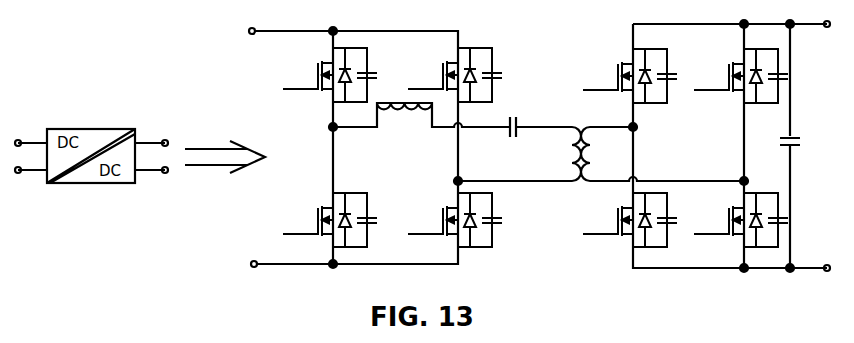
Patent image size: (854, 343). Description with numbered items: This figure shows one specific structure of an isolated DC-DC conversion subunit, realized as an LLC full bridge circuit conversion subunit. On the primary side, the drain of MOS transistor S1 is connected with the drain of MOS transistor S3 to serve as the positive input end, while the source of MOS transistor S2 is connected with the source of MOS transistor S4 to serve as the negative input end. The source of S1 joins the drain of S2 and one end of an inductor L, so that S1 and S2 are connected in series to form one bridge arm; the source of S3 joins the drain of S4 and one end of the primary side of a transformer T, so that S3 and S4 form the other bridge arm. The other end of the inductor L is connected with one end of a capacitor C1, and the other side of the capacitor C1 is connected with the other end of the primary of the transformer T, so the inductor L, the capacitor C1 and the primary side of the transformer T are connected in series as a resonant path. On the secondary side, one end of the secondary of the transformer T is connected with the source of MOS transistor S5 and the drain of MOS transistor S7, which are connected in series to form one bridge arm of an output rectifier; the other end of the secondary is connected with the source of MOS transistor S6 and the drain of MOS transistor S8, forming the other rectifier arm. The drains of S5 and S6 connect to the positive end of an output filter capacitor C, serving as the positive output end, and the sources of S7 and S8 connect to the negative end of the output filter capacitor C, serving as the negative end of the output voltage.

The MOS transistor S1 is at (330, 75).
The MOS transistor S2 is at (330, 220).
The MOS transistor S3 is at (455, 75).
The MOS transistor S4 is at (455, 220).
The MOS transistor S5 is at (630, 76).
The MOS transistor S6 is at (741, 76).
The MOS transistor S7 is at (630, 220).
The MOS transistor S8 is at (741, 220).
The inductor L is at (421, 126).
The capacitor C1 is at (541, 115).
The transformer T is at (601, 167).
The output filter capacitor C is at (799, 146).